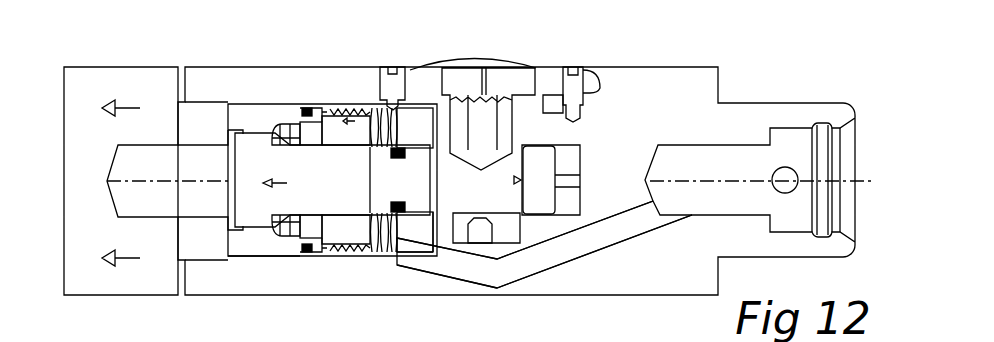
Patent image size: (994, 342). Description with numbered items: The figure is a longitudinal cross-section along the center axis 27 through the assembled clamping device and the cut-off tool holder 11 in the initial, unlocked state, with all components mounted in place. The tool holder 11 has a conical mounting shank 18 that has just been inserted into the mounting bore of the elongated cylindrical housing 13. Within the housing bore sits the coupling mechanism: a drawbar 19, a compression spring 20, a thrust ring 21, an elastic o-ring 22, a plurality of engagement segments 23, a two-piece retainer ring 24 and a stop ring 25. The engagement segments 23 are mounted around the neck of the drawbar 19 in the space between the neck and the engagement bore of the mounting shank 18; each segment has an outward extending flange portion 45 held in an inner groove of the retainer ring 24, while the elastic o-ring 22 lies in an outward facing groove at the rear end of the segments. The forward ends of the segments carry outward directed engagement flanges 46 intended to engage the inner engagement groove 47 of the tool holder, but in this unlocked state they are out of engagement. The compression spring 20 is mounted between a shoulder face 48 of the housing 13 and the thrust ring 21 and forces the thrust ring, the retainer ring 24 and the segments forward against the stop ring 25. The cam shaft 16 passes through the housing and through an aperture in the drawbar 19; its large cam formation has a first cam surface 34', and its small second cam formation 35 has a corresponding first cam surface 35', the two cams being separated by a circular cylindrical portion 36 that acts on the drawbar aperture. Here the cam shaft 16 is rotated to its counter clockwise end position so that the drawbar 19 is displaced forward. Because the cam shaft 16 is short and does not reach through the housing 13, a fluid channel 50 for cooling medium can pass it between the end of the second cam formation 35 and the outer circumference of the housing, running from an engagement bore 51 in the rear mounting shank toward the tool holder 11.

The cut-off tool holder 11 is at (108, 83).
The housing 13 is at (653, 85).
The cam shaft 16 is at (482, 184).
The mounting shank 18 is at (258, 242).
The drawbar 19 is at (391, 175).
The compression spring 20 is at (380, 253).
The thrust ring 21 is at (345, 113).
The elastic o-ring 22 is at (345, 133).
The engagement segments 23 is at (305, 138).
The retainer ring 24 is at (318, 240).
The stop ring 25 is at (322, 108).
The center axis 27 is at (862, 182).
The first cam surface 34' is at (564, 79).
The second cam formation 35 is at (525, 267).
The first cam surface 35' is at (524, 240).
The circular cylindrical portion 36 is at (438, 183).
The flange portion 45 is at (317, 228).
The engagement flanges 46 is at (280, 128).
The engagement groove 47 is at (292, 128).
The shoulder face 48 is at (398, 227).
The fluid channel 50 is at (590, 240).
The engagement bore 51 is at (795, 147).